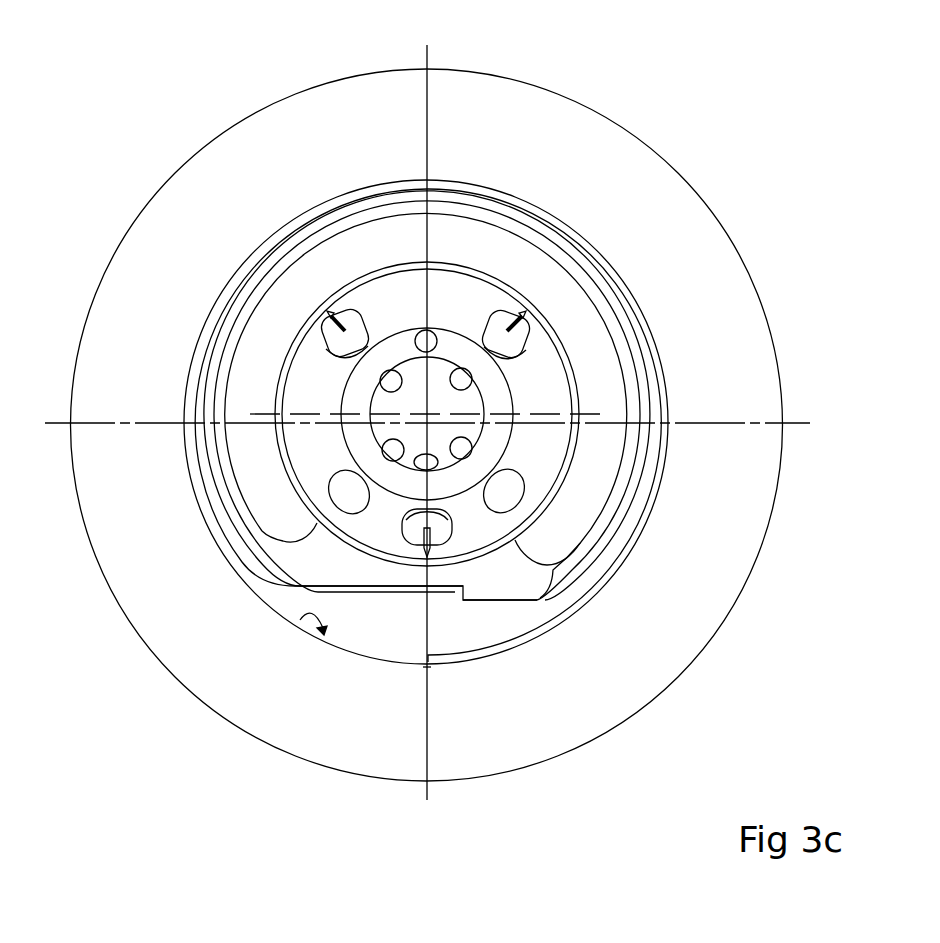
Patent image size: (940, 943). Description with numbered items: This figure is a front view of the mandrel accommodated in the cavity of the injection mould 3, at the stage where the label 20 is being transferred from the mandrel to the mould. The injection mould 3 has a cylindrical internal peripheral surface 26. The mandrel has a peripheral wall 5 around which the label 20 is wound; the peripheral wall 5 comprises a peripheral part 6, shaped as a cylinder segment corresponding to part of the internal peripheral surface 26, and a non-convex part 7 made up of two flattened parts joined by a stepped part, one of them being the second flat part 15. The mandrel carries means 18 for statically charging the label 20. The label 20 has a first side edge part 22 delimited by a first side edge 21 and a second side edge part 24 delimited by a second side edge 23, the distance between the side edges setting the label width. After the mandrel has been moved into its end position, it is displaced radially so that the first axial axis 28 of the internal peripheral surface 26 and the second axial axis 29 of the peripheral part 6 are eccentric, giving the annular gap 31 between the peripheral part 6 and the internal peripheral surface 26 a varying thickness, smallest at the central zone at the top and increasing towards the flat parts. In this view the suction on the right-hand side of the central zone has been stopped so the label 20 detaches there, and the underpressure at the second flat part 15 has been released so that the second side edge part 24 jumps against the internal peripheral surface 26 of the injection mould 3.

The injection mould 3 is at (578, 152).
The peripheral wall 5 is at (620, 294).
The peripheral part 6 is at (645, 356).
The non-convex part 7 is at (495, 620).
The second flat part 15 is at (515, 603).
The means for statically charging the label 18 is at (351, 322).
The label 20 is at (226, 546).
The first side edge 21 is at (453, 595).
The first side edge part 22 is at (390, 587).
The second side edge 23 is at (423, 667).
The second side edge part 24 is at (487, 660).
The internal peripheral surface 26 is at (303, 617).
The first axial axis 28 is at (427, 417).
The second axial axis 29 is at (427, 415).
The annular gap 31 is at (203, 493).